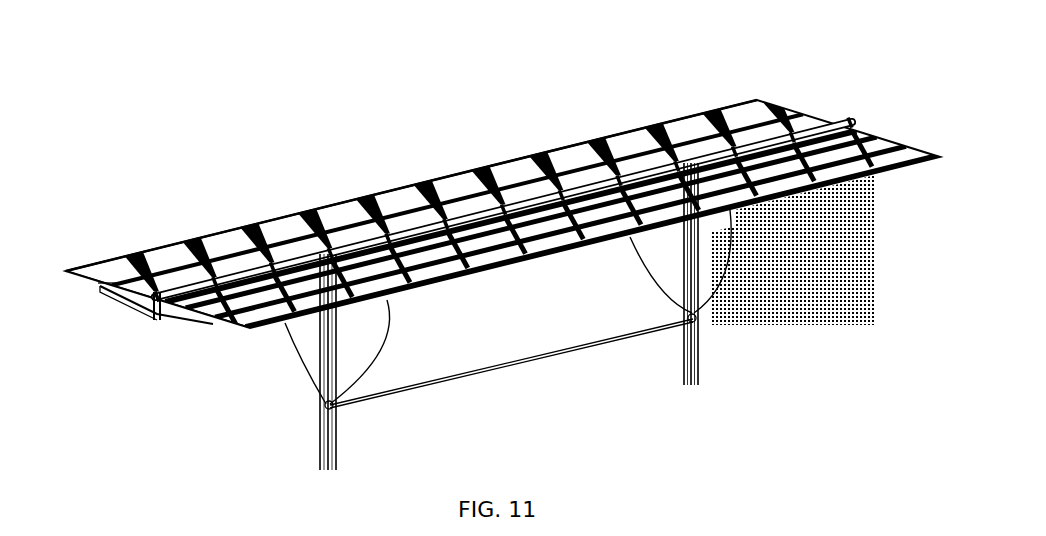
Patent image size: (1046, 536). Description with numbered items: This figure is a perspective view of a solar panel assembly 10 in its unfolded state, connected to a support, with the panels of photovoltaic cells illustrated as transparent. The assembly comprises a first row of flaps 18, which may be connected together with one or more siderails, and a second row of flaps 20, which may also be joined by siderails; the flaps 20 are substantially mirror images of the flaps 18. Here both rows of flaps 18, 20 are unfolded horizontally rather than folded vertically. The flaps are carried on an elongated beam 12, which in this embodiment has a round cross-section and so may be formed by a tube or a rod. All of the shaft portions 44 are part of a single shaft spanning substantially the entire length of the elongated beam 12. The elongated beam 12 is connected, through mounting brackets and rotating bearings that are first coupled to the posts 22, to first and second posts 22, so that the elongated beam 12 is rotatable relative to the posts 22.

The solar panel assembly 10 is at (163, 145).
The elongated beam 12 is at (572, 246).
The first row of flaps 18 is at (837, 177).
The second row of flaps 20 is at (123, 278).
The shaft portions 44 is at (548, 168).
The posts 22 is at (338, 432).